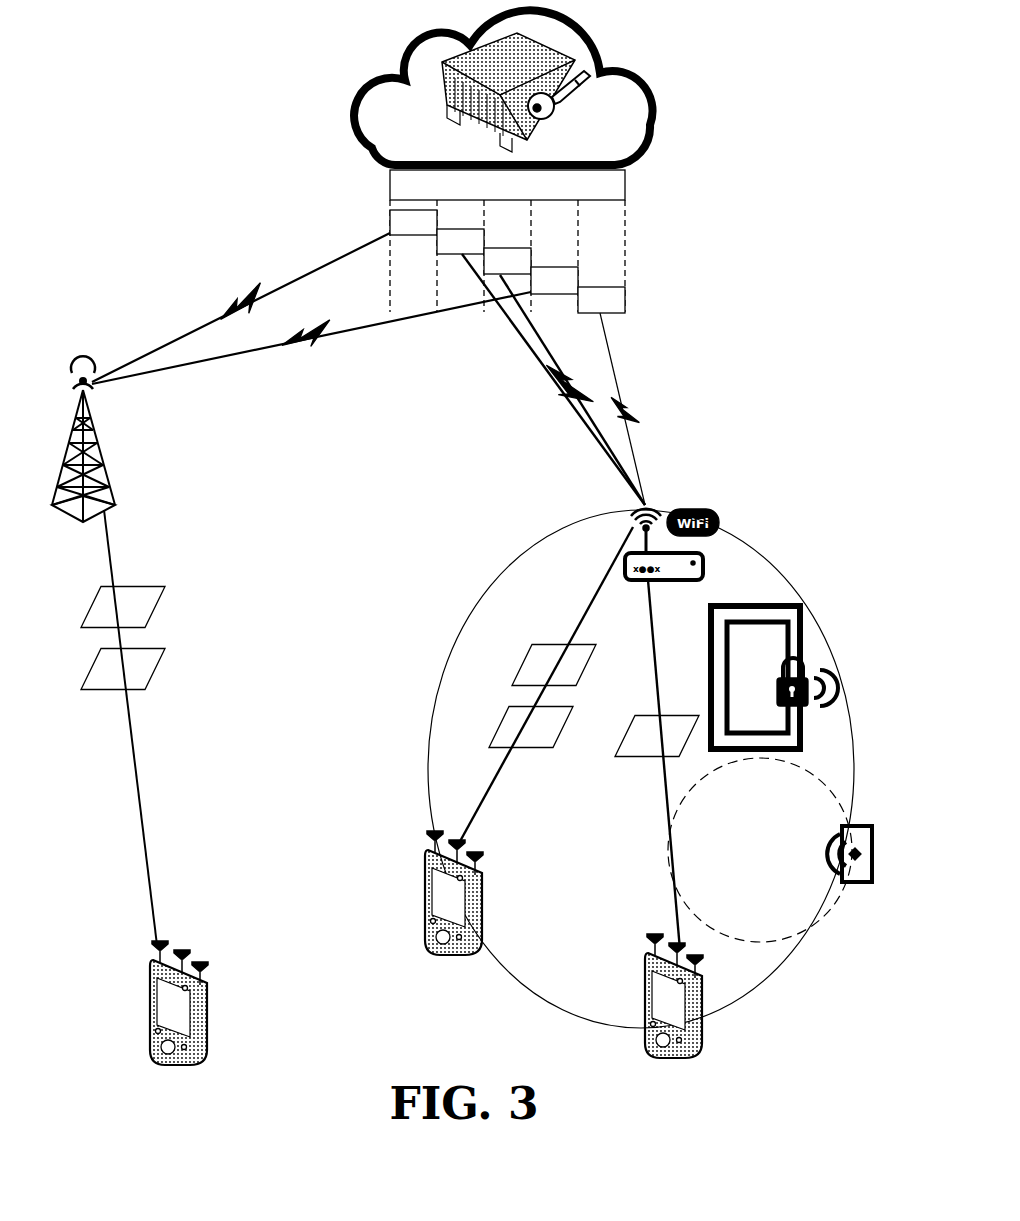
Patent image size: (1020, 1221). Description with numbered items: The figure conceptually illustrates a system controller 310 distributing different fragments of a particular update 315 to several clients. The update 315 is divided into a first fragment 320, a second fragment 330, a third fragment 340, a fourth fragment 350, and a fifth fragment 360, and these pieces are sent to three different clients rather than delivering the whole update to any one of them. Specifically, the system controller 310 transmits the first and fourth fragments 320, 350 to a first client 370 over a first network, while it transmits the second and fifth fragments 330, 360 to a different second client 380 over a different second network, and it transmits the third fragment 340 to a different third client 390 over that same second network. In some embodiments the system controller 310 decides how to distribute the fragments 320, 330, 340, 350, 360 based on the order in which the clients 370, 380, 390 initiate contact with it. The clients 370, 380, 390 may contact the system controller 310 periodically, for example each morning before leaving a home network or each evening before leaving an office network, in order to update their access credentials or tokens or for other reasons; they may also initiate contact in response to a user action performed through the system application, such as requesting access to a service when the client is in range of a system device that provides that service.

The system controller 310 is at (436, 141).
The particular update 315 is at (491, 197).
The first fragment 320 is at (399, 232).
The second fragment 330 is at (446, 251).
The third fragment 340 is at (493, 270).
The fourth fragment 350 is at (540, 289).
The fifth fragment 360 is at (587, 309).
The first client 370 is at (161, 1095).
The second client 380 is at (437, 985).
The third client 390 is at (661, 1092).